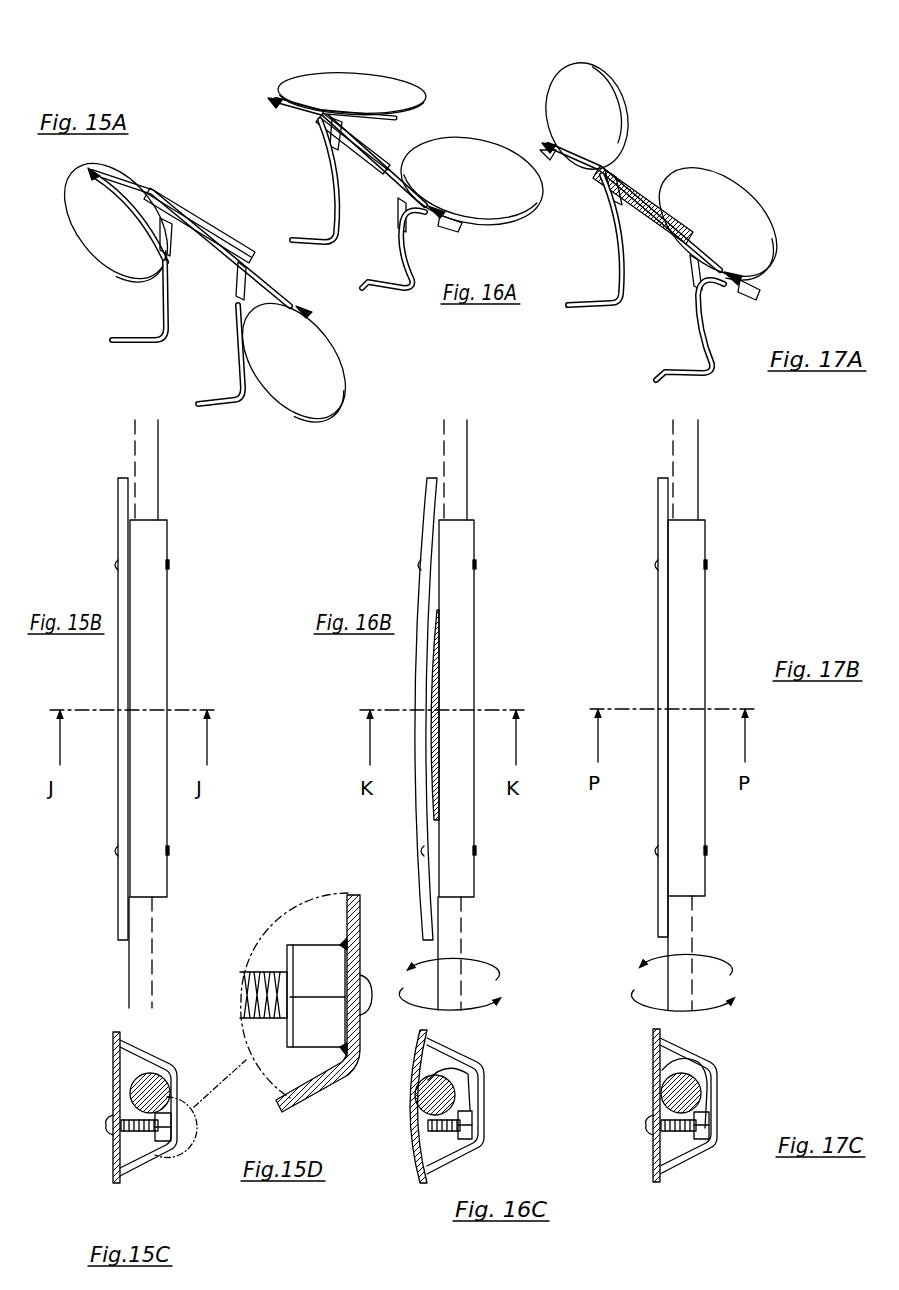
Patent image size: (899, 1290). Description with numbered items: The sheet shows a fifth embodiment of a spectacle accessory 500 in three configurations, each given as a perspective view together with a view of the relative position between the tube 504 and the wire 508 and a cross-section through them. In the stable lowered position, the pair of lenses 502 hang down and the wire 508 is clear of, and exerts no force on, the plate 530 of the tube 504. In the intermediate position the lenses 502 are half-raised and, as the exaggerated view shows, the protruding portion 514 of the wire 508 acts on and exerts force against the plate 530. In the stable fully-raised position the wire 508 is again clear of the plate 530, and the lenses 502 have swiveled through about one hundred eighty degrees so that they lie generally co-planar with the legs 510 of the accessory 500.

In FIG. 15A, the spectacle accessory 500 is at (186, 150).
In FIG. 16A, the spectacle accessory 500 is at (470, 104).
In FIG. 17A, the spectacle accessory 500 is at (730, 128).
In FIG. 15A, the pair of lenses 502 is at (318, 375).
In FIG. 16A, the pair of lenses 502 is at (347, 82).
In FIG. 17A, the pair of lenses 502 is at (592, 97).
In FIG. 15B, the tube 504 is at (150, 606).
In FIG. 16B, the tube 504 is at (459, 606).
In FIG. 17B, the tube 504 is at (685, 600).
In FIG. 15B, the wire 508 is at (150, 499).
In FIG. 16B, the wire 508 is at (459, 499).
In FIG. 17B, the wire 508 is at (685, 500).
In FIG. 15C, the wire 508 is at (130, 1083).
In FIG. 16C, the wire 508 is at (432, 1085).
In FIG. 17C, the wire 508 is at (660, 1100).
In FIG. 15A, the legs 510 is at (163, 300).
In FIG. 16A, the legs 510 is at (358, 204).
In FIG. 17A, the legs 510 is at (620, 256).
In FIG. 16B, the protruding portion 514 is at (435, 705).
In FIG. 15B, the plate 530 is at (118, 666).
In FIG. 16B, the plate 530 is at (427, 666).
In FIG. 17B, the plate 530 is at (658, 650).
In FIG. 15C, the plate 530 is at (113, 1153).
In FIG. 16C, the plate 530 is at (409, 1128).
In FIG. 17C, the plate 530 is at (655, 1150).